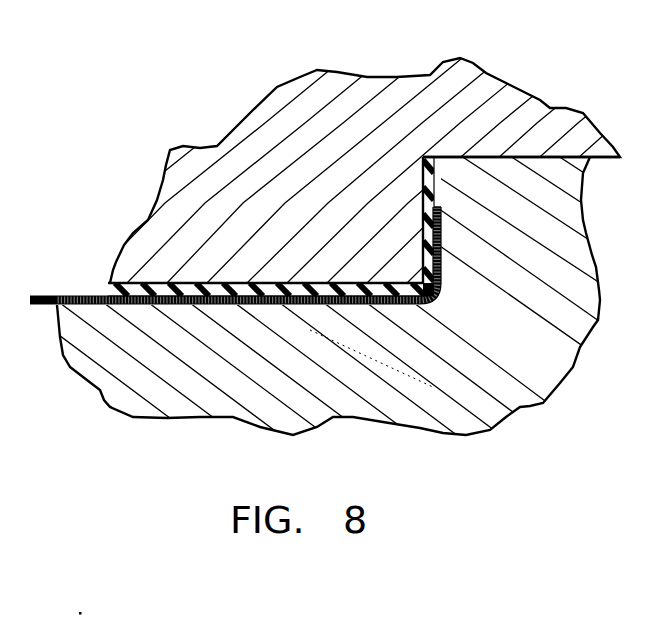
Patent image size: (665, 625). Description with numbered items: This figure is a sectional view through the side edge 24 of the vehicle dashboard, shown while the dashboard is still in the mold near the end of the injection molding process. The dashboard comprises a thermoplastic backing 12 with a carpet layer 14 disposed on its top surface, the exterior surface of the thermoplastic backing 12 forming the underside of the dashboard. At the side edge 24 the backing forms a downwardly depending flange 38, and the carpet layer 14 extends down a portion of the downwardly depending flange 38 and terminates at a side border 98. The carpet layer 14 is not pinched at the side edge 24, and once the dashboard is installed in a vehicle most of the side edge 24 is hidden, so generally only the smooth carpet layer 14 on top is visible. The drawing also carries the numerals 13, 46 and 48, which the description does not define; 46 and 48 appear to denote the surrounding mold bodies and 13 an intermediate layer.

The thermoplastic backing 12 is at (153, 280).
The inner coating layer 13 is at (228, 277).
The carpet layer 14 is at (87, 297).
The side edge 24 is at (465, 290).
The downwardly depending flange 38 is at (421, 190).
The upper body member 46 is at (268, 137).
The lower body member 48 is at (513, 392).
The side border 98 is at (440, 208).